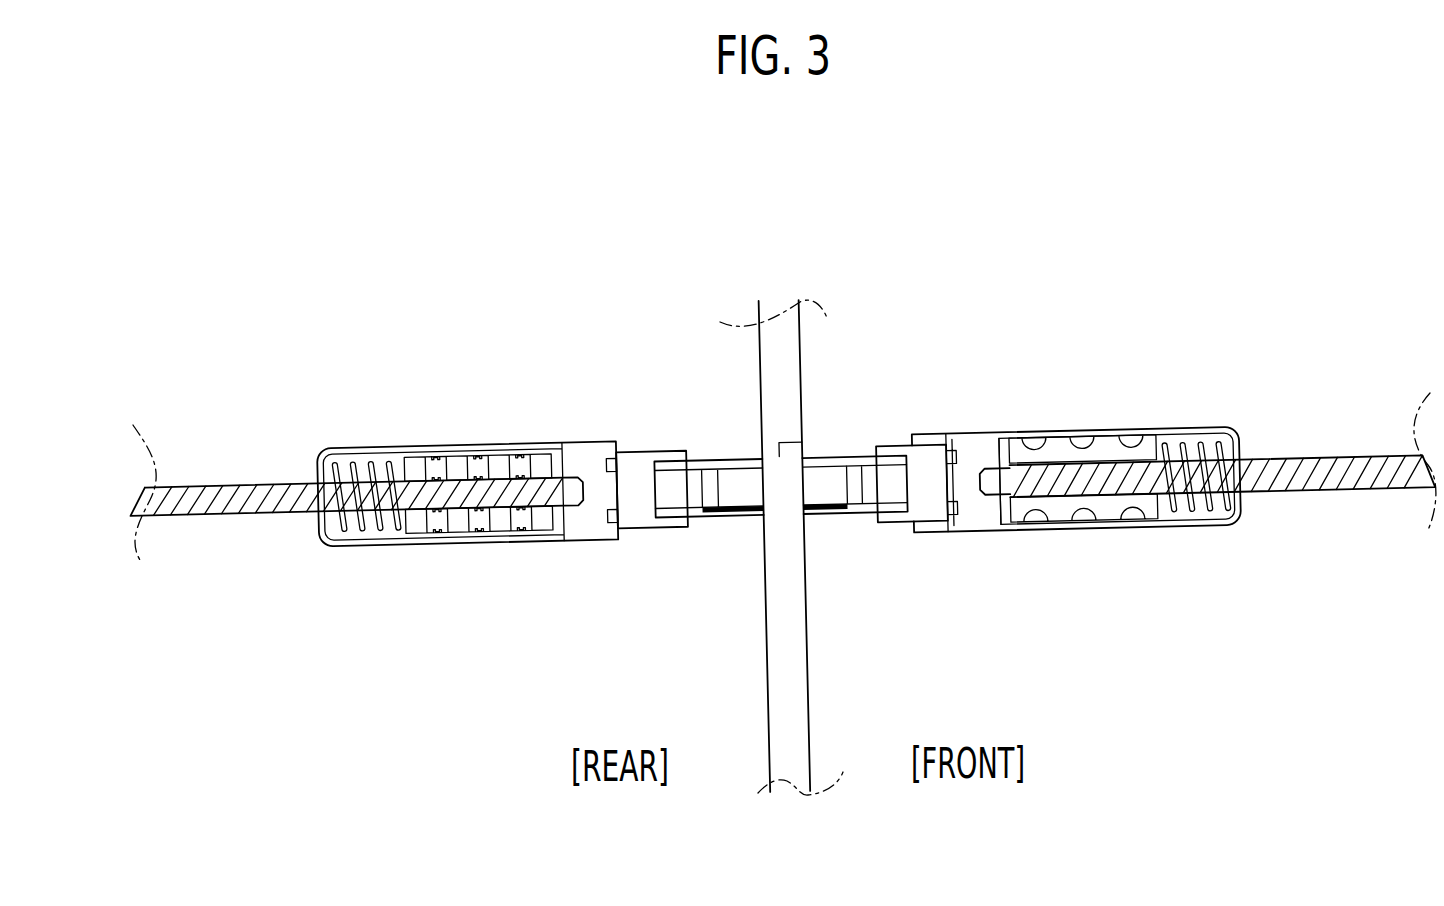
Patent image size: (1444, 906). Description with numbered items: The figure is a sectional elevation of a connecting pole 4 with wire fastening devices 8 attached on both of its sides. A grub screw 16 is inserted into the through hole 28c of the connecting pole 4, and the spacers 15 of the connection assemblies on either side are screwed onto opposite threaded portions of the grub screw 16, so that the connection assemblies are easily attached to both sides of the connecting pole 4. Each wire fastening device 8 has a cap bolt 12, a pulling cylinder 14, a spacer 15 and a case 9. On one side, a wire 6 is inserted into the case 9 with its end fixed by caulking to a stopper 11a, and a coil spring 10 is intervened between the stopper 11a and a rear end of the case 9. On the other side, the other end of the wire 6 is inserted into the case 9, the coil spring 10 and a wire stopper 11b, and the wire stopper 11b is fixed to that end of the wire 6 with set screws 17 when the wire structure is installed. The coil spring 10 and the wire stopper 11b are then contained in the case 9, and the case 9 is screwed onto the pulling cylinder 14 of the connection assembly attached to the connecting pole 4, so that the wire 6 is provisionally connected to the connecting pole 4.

The connecting pole 4 is at (790, 730).
The wire 6 is at (1335, 478).
The wire fastening device 8 is at (1031, 292).
The case 9 is at (1133, 440).
The coil spring 10 is at (362, 530).
The stopper 11a is at (1052, 440).
The wire stopper 11b is at (483, 533).
The cap bolt 12 is at (968, 505).
The pulling cylinder 14 is at (910, 597).
The spacer 15 is at (843, 585).
The grub screw 16 is at (753, 495).
The set screws 17 is at (508, 440).
The through hole 28c is at (800, 443).